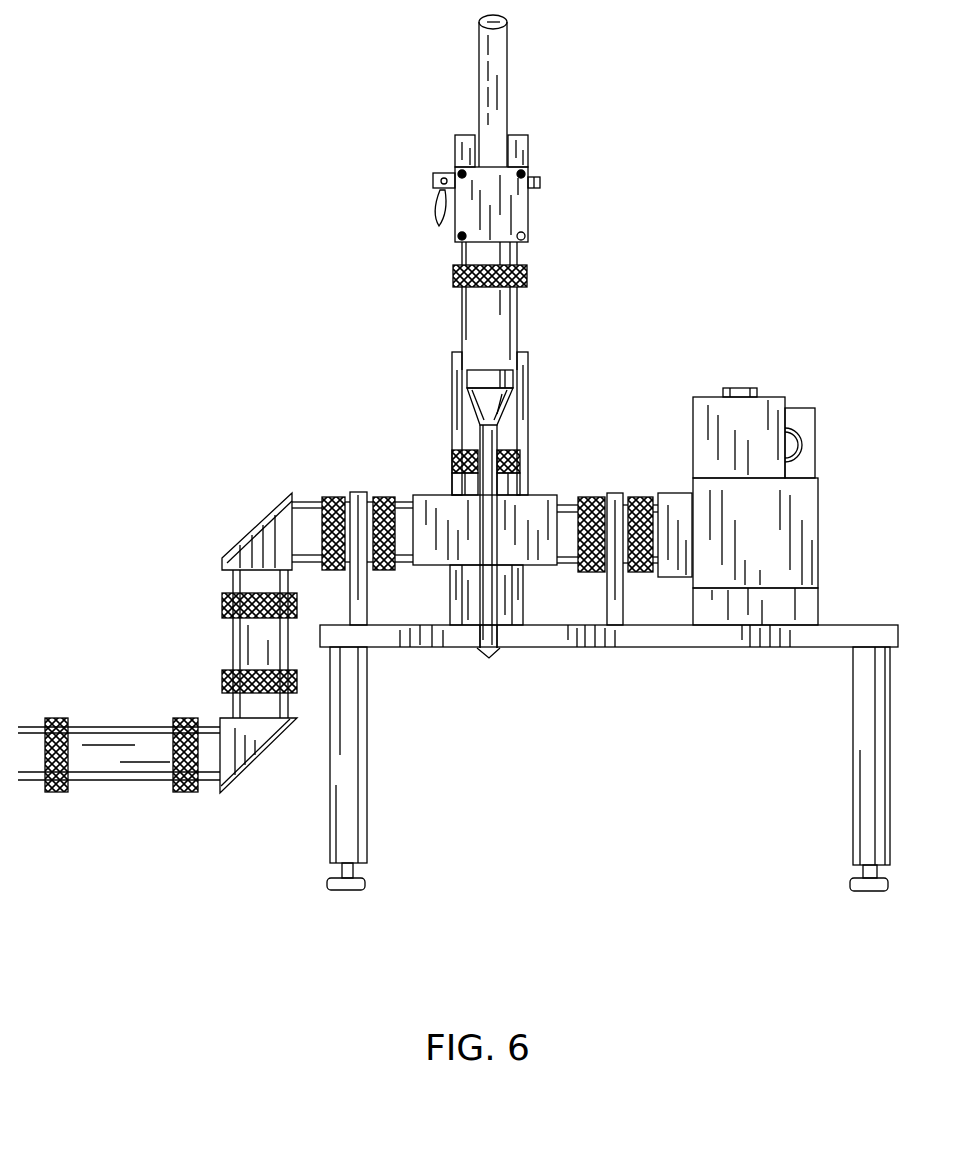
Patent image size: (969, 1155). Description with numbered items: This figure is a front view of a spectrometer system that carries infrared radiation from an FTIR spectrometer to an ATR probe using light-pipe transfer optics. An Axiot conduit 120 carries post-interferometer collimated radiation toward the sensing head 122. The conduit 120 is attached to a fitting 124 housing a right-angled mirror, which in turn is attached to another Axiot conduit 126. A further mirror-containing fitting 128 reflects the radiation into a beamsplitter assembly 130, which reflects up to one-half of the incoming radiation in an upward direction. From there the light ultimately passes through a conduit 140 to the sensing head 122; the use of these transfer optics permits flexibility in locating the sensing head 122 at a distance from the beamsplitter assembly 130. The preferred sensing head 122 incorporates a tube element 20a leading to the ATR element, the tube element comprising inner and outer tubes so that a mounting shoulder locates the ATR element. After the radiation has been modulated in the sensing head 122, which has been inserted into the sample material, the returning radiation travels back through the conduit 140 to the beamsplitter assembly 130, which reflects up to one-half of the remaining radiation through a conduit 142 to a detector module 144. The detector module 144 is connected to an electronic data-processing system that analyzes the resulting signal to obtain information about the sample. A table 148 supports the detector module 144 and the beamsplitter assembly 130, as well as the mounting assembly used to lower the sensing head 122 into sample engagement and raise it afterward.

The conduit 140 is at (480, 321).
The tube element 20a is at (468, 488).
The sensing head 122 is at (497, 637).
The beamsplitter assembly 130 is at (540, 497).
The mirror-containing fitting 128 is at (258, 527).
The Axiot conduit 126 is at (247, 650).
The fitting 124 is at (243, 747).
The Axiot conduit 120 is at (103, 763).
The conduit 142 is at (568, 505).
The detector module 144 is at (820, 535).
The table 148 is at (700, 662).